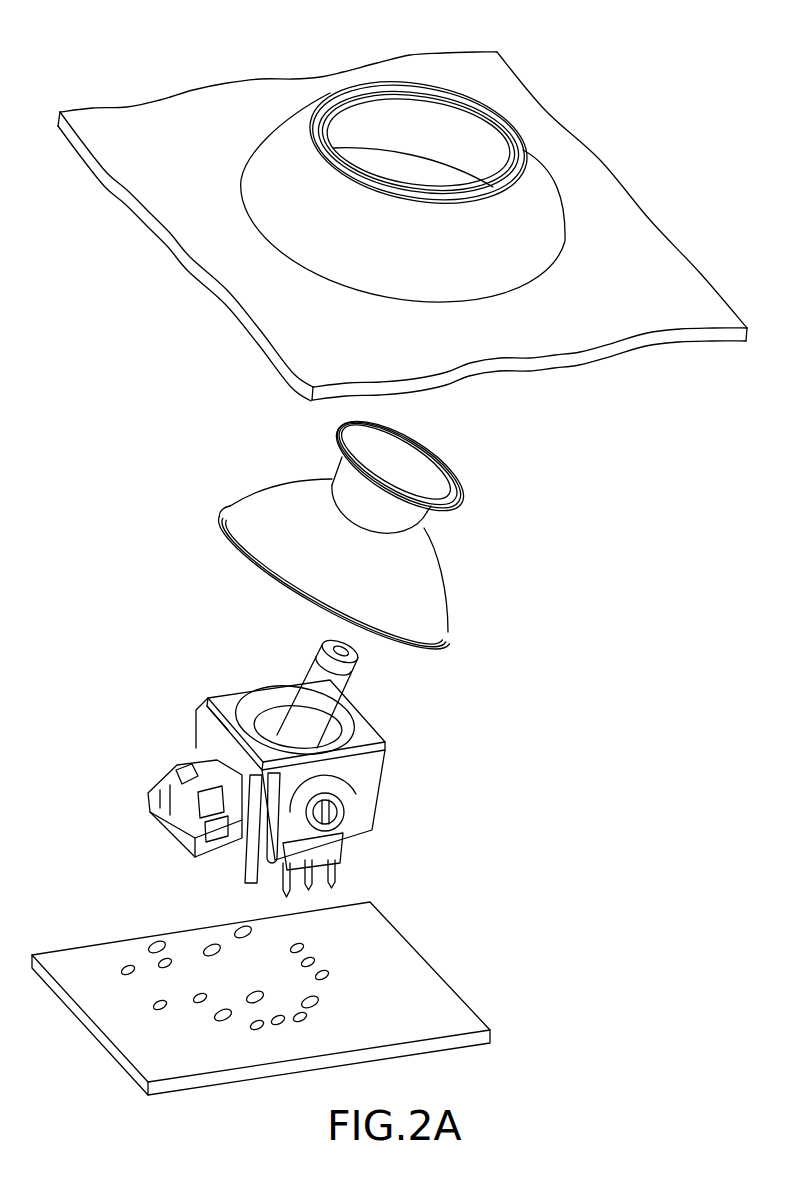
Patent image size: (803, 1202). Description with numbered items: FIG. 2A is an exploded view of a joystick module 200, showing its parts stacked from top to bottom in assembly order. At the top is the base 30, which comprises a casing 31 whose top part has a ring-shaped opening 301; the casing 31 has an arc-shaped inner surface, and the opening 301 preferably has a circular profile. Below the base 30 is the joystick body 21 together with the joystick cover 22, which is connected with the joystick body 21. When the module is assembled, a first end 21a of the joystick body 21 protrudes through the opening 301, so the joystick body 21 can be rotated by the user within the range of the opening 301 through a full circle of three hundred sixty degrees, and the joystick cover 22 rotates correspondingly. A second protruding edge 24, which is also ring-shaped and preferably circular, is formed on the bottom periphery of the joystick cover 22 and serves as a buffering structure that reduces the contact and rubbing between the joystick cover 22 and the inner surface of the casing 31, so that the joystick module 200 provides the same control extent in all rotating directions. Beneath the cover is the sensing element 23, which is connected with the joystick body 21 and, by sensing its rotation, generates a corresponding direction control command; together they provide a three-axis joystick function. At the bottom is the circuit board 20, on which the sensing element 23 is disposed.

The joystick module 200 is at (222, 32).
The base 30 is at (622, 229).
The casing 31 is at (542, 220).
The opening 301 is at (418, 125).
The joystick body 21 is at (413, 462).
The first end 21a is at (343, 482).
The joystick cover 22 is at (427, 587).
The second protruding edge 24 is at (233, 540).
The sensing element 23 is at (165, 820).
The circuit board 20 is at (403, 972).